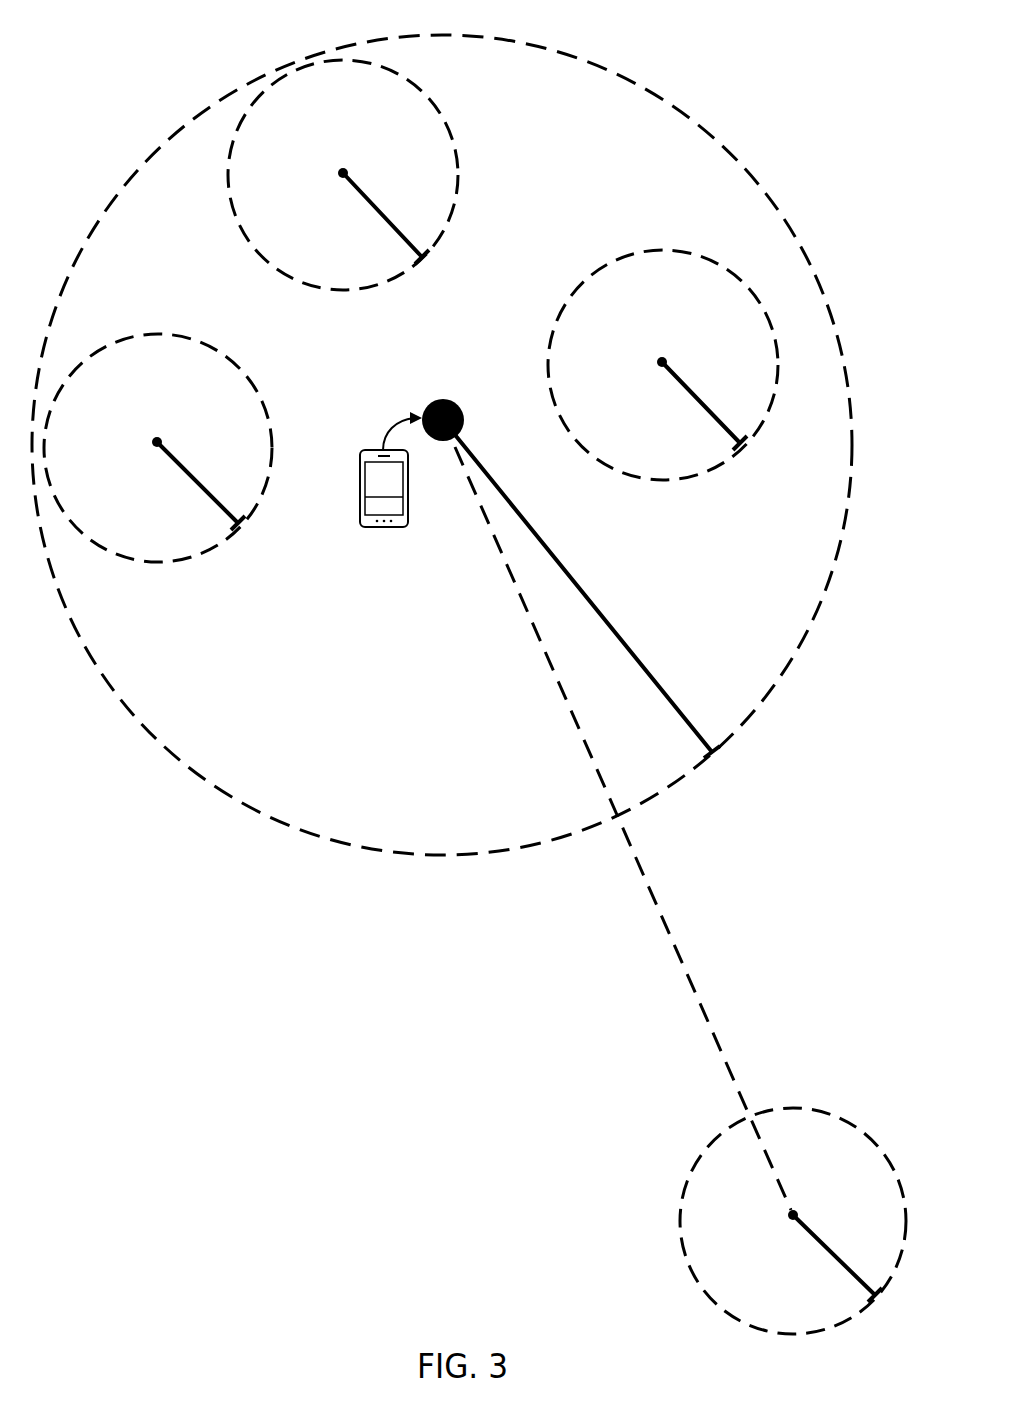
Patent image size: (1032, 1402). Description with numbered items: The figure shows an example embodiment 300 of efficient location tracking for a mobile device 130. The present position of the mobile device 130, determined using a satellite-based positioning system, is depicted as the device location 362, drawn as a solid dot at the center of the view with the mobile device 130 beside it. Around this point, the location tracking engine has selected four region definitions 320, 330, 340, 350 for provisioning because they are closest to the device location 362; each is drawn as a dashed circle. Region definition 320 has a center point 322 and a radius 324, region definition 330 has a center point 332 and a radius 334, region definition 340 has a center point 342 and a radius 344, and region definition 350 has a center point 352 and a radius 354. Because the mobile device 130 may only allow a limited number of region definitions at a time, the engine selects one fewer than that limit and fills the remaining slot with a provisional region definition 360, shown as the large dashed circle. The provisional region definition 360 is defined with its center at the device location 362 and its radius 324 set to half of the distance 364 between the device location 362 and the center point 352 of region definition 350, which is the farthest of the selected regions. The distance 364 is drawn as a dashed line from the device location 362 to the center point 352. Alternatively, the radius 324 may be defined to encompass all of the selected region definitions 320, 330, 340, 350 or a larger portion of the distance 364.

The example embodiment of efficient location tracking 300 is at (118, 62).
The mobile device 130 is at (391, 469).
The region definition 320 is at (388, 73).
The center point 322 is at (346, 168).
The radius 324 is at (383, 210).
The region definition 330 is at (204, 343).
The center point 332 is at (159, 438).
The radius 334 is at (197, 479).
The region definition 340 is at (710, 263).
The center point 342 is at (664, 358).
The radius 344 is at (701, 399).
The region definition 350 is at (839, 1109).
The center point 352 is at (795, 1211).
The radius 354 is at (833, 1250).
The provisional region definition 360 is at (627, 73).
The device location 362 is at (440, 398).
The distance 364 is at (665, 933).